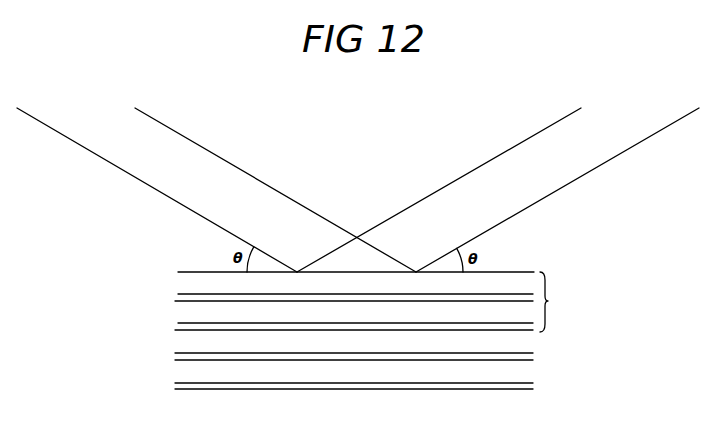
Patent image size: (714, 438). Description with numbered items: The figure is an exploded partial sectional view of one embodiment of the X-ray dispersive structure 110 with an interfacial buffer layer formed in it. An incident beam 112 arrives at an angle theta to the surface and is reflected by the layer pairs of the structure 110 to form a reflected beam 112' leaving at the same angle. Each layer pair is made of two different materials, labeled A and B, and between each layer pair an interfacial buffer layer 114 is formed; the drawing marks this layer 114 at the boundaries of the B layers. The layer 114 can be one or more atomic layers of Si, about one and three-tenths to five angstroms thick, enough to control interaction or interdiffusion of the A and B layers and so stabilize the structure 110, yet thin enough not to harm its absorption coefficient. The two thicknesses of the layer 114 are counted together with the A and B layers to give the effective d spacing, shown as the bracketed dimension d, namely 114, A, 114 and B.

The X-ray dispersive structure 110 is at (386, 316).
The incident beam 112 is at (216, 190).
The reflected beam 112' is at (498, 190).
The interfacial buffer layer 114 is at (175, 330).